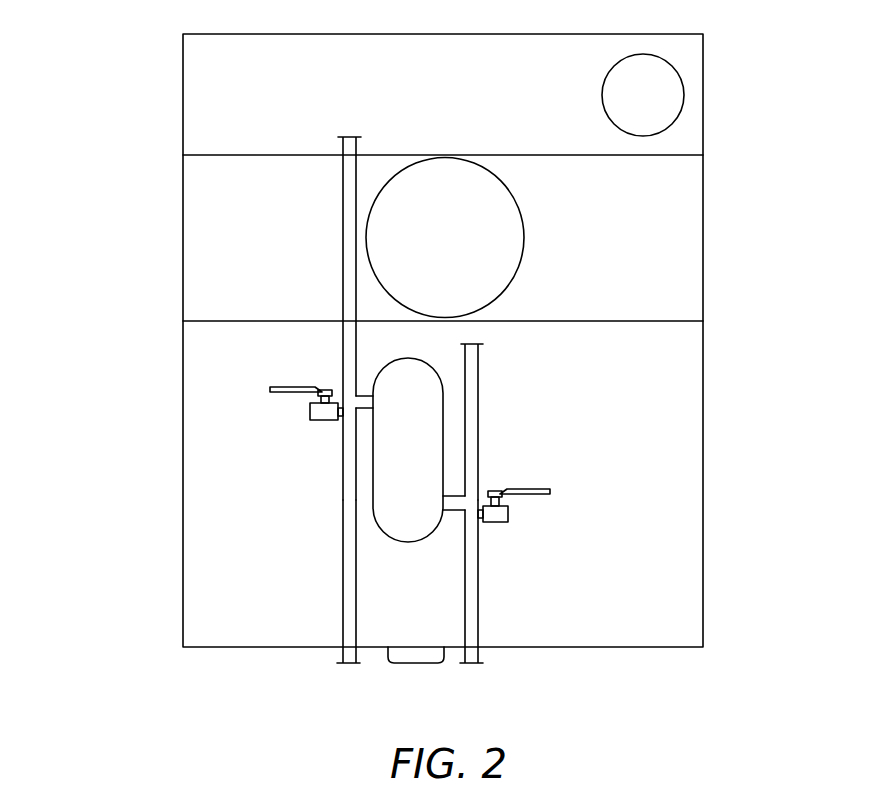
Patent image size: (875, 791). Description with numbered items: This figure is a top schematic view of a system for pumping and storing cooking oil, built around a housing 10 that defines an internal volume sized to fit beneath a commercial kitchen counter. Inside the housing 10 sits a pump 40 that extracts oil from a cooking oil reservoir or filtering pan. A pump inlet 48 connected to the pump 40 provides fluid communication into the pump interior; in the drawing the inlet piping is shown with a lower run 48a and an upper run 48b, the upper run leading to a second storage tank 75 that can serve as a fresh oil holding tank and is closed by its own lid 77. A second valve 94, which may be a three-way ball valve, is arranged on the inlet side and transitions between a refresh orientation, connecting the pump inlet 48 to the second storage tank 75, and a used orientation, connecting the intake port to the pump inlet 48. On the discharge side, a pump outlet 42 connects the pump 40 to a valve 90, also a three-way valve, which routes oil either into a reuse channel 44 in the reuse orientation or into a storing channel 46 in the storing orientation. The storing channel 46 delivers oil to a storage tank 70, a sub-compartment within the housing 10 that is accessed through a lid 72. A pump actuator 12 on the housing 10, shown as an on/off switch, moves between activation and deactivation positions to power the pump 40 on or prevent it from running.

The housing 10 is at (747, 667).
The pump actuator 12 is at (393, 660).
The pump 40 is at (398, 354).
The pump outlet 42 is at (455, 495).
The reuse channel 44 is at (481, 580).
The storing channel 46 is at (480, 372).
The pump inlet 48 is at (368, 412).
The inlet pipe lower portion 48a is at (340, 580).
The inlet pipe upper portion 48b is at (340, 366).
The storage tank 70 is at (194, 253).
The lid 72 is at (512, 200).
The second storage tank 75 is at (194, 108).
The fresh tank lid 77 is at (605, 75).
The valve 90 is at (510, 512).
The second valve 94 is at (308, 408).